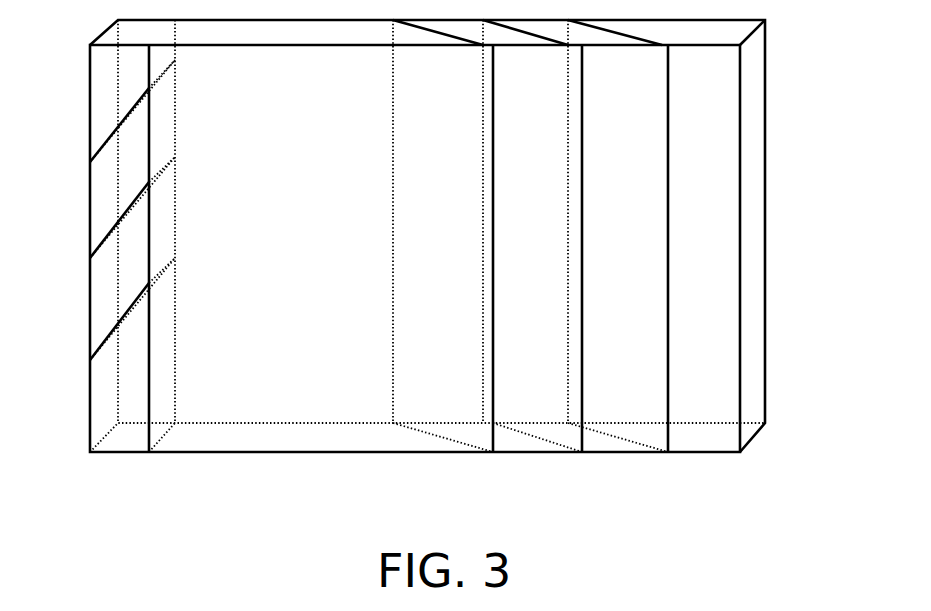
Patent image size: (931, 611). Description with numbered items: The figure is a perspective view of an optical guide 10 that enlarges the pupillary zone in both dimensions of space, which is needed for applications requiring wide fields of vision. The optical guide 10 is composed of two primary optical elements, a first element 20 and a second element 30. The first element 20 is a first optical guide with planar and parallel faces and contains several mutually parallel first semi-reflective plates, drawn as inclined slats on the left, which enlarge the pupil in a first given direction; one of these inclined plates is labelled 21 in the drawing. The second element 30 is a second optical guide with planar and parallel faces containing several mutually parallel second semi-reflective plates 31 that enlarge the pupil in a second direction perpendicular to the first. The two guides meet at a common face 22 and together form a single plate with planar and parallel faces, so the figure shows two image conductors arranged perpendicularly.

The optical guide 10 is at (227, 467).
The first element 20 is at (98, 395).
The inclined slat 21 is at (160, 173).
The common face 22 is at (177, 105).
The second element 30 is at (766, 243).
The second semi-reflective plates 31 is at (416, 194).